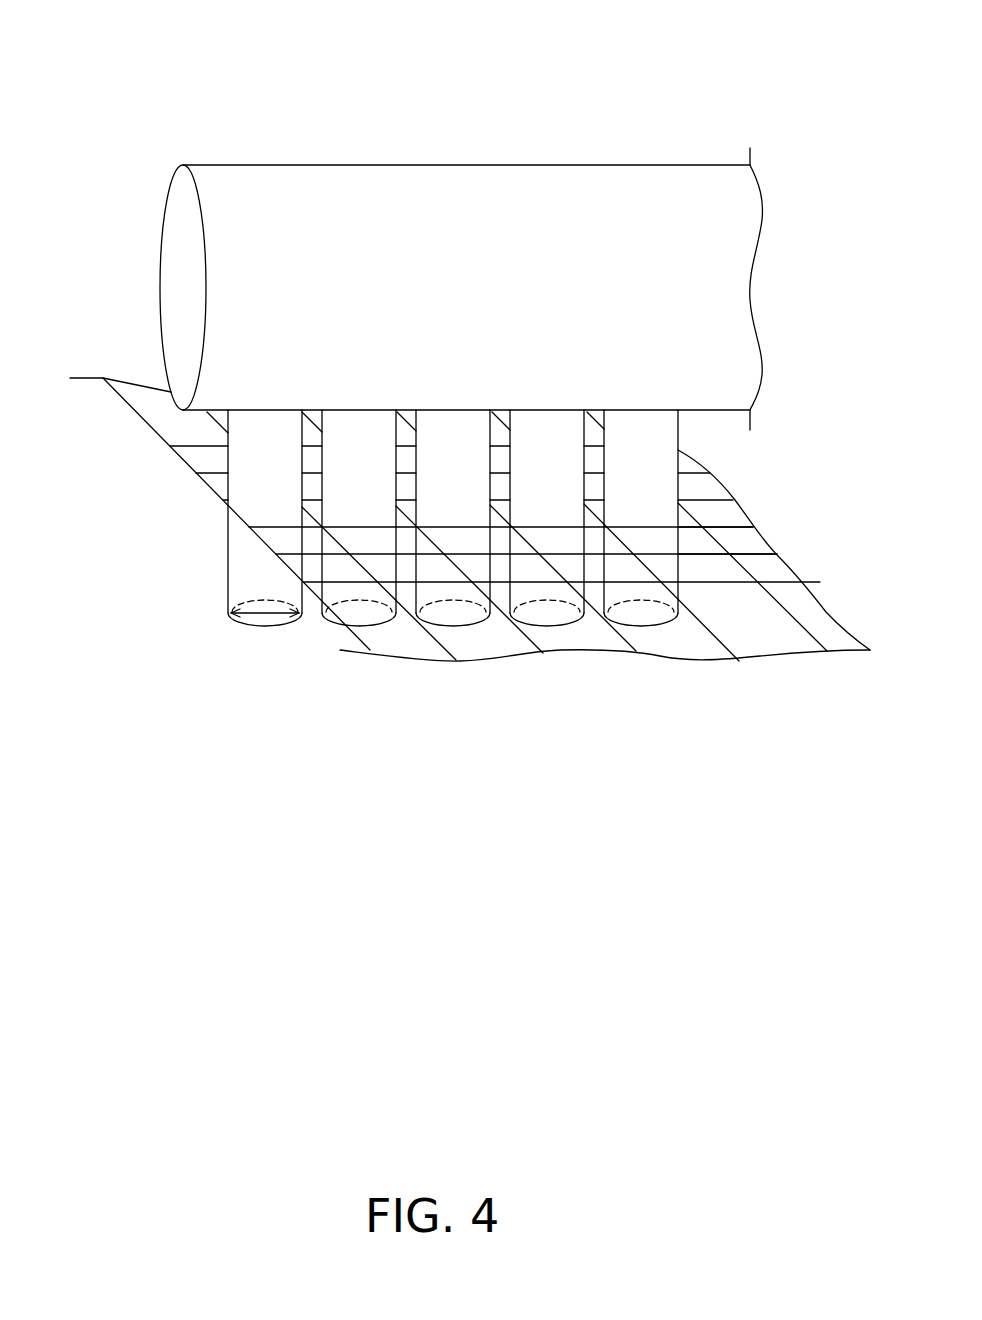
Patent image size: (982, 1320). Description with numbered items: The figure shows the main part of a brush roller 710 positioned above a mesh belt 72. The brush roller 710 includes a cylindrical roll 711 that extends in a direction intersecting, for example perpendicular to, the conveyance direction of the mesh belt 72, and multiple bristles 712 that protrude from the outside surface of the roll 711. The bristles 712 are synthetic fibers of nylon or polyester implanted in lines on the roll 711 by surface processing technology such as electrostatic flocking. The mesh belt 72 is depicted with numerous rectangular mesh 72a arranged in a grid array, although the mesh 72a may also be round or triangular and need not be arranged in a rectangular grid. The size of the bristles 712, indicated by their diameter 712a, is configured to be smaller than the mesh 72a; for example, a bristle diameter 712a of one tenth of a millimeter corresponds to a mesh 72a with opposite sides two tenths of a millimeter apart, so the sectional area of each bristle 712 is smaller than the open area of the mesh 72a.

The brush roller 710 is at (503, 79).
The roll 711 is at (571, 165).
The bristles 712 is at (635, 443).
The diameter 712a is at (264, 616).
The mesh belt 72 is at (148, 428).
The mesh 72a is at (688, 547).